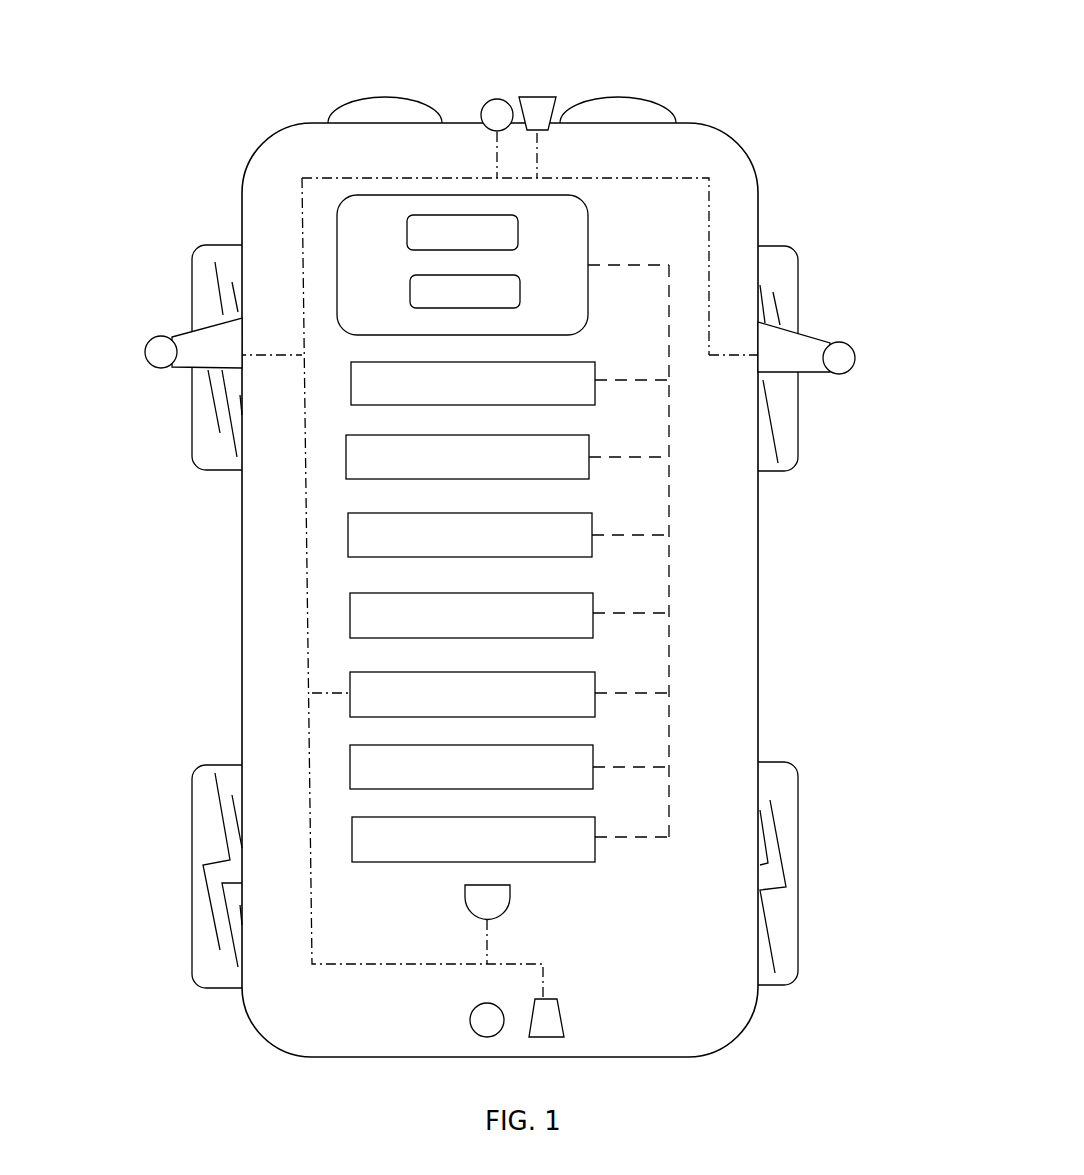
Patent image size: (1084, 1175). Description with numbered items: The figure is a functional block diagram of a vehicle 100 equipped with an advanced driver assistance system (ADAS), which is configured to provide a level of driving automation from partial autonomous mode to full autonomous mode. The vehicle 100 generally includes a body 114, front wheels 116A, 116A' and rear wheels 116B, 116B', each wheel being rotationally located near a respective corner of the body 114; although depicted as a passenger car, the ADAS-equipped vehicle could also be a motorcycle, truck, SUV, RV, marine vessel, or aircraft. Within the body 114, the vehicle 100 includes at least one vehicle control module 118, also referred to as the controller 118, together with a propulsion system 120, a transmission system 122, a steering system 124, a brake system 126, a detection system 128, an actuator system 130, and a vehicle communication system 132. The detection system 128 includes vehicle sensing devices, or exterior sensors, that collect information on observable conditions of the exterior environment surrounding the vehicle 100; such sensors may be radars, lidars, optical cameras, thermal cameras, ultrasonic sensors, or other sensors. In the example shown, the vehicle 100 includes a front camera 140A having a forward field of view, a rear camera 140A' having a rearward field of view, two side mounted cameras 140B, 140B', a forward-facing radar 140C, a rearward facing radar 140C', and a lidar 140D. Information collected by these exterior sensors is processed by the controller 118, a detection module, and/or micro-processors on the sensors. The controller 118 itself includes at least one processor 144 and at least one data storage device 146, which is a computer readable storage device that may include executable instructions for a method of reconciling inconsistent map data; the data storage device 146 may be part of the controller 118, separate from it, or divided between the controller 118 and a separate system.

The vehicle 100 is at (807, 172).
The body 114 is at (243, 680).
The front wheel 116A is at (144, 346).
The front wheel 116A' is at (850, 347).
The rear wheel 116B is at (142, 876).
The rear wheel 116B' is at (857, 833).
The vehicle control module 118 is at (586, 204).
The propulsion system 120 is at (473, 383).
The transmission system 122 is at (467, 457).
The steering system 124 is at (470, 535).
The brake system 126 is at (471, 615).
The detection system 128 is at (472, 694).
The actuator system 130 is at (471, 767).
The vehicle communication system 132 is at (473, 839).
The front camera 140A is at (422, 72).
The rear camera 140A' is at (417, 1052).
The side mounted camera 140B is at (155, 410).
The side mounted camera 140B' is at (846, 399).
The forward-facing radar 140C is at (600, 82).
The rearward facing radar 140C' is at (629, 1050).
The lidar 140D is at (490, 903).
The processor 144 is at (462, 232).
The data storage device 146 is at (465, 291).